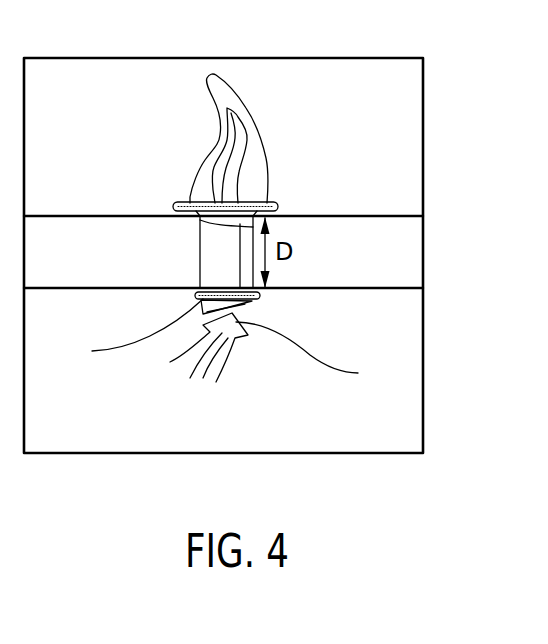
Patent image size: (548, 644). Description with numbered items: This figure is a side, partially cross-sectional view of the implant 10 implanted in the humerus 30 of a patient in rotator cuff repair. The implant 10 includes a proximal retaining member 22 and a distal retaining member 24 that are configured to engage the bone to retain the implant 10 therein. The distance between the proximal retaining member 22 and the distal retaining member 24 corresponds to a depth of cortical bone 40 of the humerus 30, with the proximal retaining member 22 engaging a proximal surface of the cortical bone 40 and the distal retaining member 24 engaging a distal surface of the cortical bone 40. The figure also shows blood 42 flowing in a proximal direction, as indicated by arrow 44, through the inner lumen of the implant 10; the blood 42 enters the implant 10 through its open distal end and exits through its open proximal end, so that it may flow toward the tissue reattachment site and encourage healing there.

The implant 10 is at (241, 231).
The proximal retaining member 22 is at (178, 203).
The distal retaining member 24 is at (136, 332).
The humerus 30 is at (82, 189).
The cortical bone 40 is at (256, 85).
The blood 42 is at (216, 398).
The arrow 44 is at (308, 354).